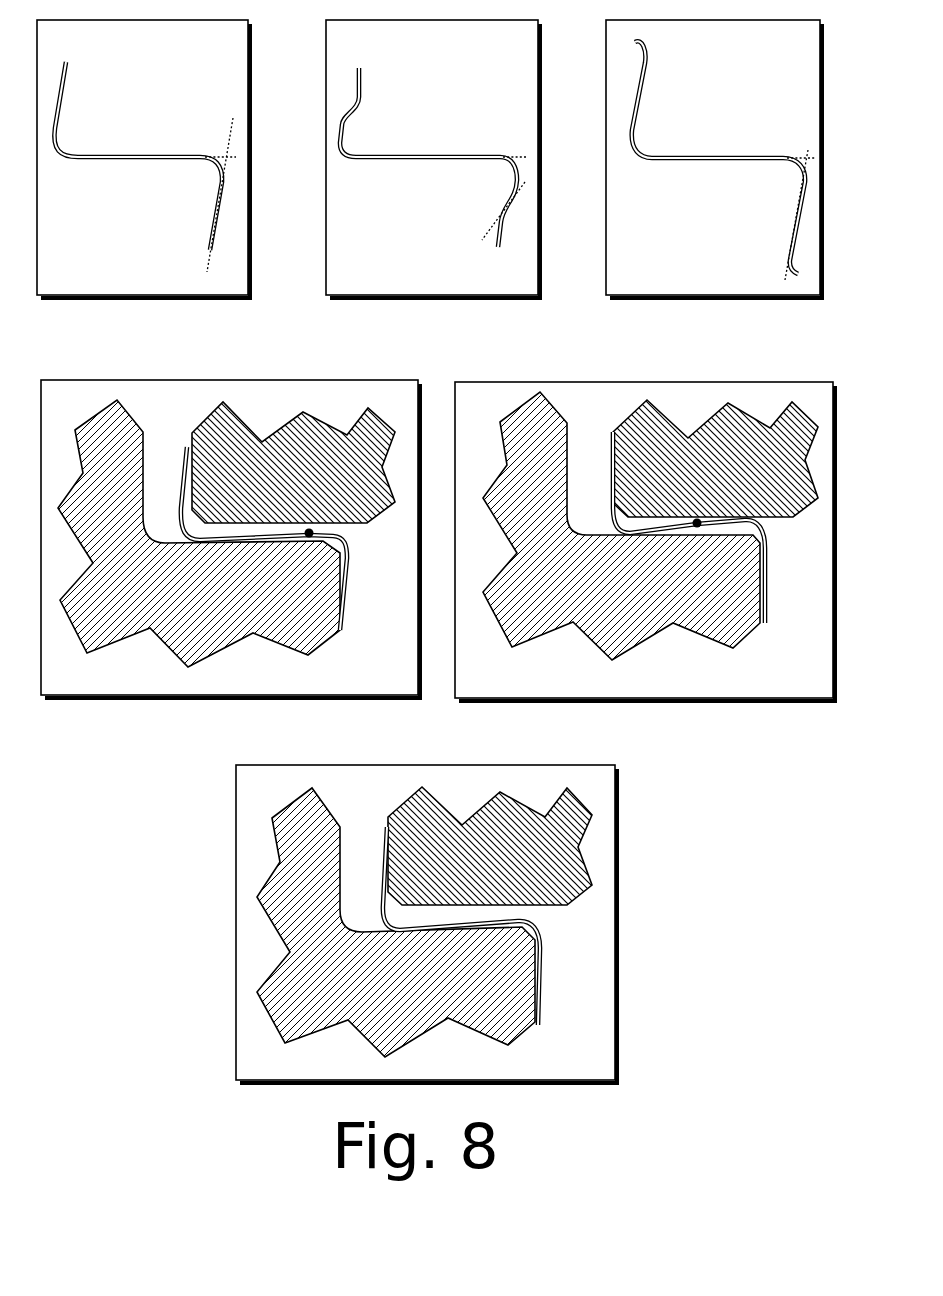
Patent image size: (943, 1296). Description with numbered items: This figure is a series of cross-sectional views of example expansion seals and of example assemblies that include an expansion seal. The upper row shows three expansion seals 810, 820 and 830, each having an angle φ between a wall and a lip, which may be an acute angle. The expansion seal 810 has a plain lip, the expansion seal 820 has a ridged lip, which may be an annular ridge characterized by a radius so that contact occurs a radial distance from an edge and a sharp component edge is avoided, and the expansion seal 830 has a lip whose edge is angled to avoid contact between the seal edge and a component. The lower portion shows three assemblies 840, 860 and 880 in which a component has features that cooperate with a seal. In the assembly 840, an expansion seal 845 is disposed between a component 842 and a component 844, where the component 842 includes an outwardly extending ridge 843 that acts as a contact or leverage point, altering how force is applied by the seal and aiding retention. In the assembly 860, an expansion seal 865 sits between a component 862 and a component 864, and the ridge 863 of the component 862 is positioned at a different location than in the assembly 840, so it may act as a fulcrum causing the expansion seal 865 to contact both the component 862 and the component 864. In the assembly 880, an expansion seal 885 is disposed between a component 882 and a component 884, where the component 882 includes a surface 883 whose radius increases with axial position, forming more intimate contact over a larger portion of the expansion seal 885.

The expansion seal 810 is at (223, 61).
The expansion seal 820 is at (515, 60).
The expansion seal 830 is at (800, 60).
The assembly 840 is at (230, 539).
The component 842 is at (173, 599).
The ridge 843 is at (310, 538).
The component 844 is at (270, 493).
The expansion seal 845 is at (348, 568).
The assembly 860 is at (645, 541).
The component 862 is at (597, 587).
The ridge 863 is at (696, 528).
The component 864 is at (715, 458).
The expansion seal 865 is at (767, 560).
The assembly 880 is at (426, 924).
The component 882 is at (367, 986).
The surface 883 is at (468, 933).
The component 884 is at (488, 885).
The expansion seal 885 is at (542, 958).